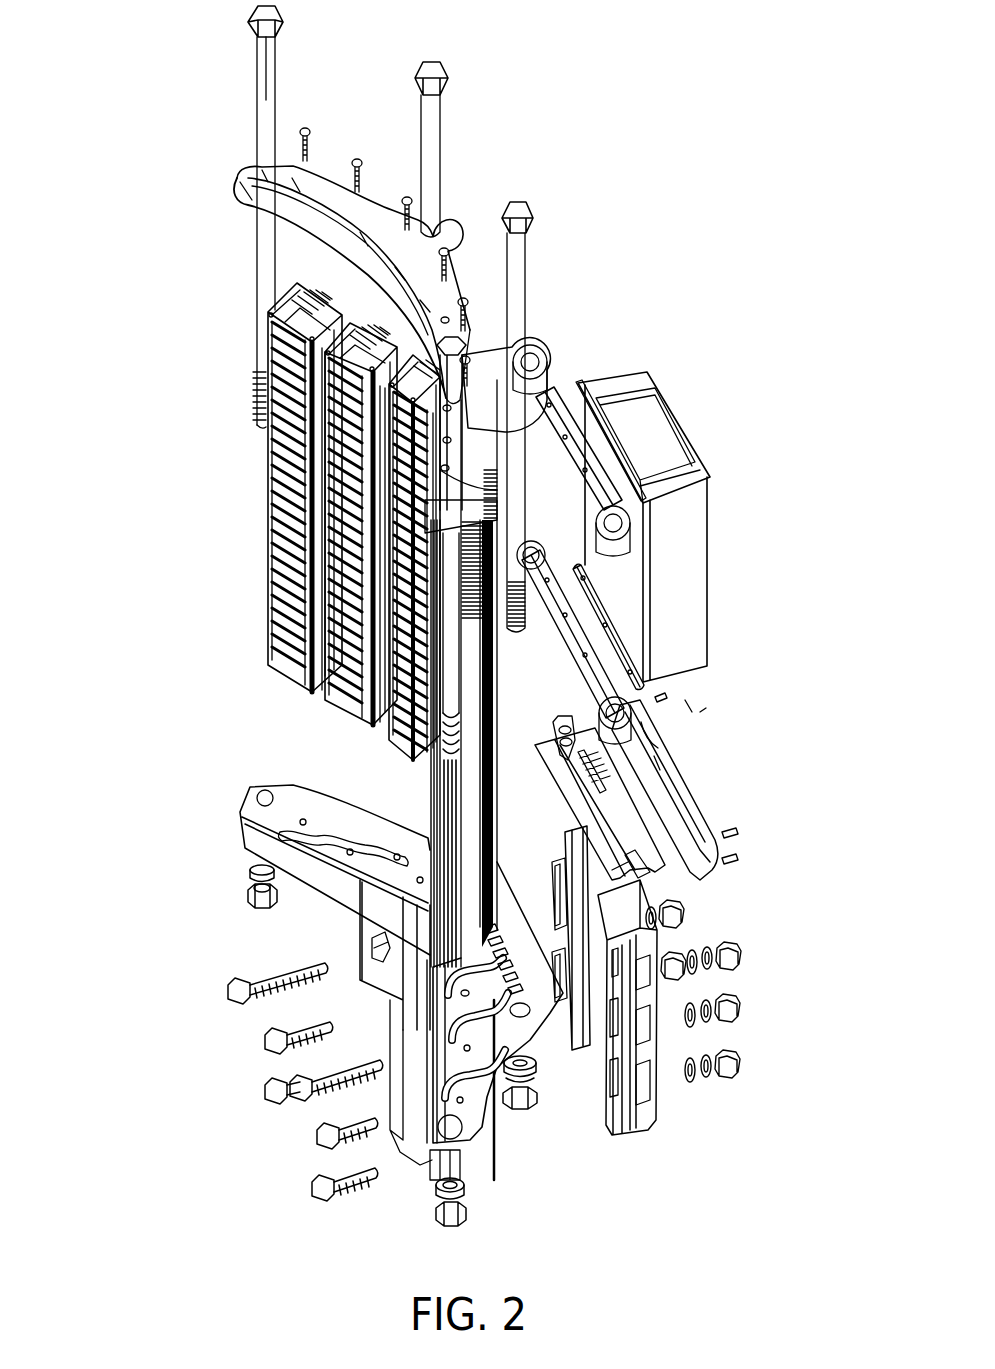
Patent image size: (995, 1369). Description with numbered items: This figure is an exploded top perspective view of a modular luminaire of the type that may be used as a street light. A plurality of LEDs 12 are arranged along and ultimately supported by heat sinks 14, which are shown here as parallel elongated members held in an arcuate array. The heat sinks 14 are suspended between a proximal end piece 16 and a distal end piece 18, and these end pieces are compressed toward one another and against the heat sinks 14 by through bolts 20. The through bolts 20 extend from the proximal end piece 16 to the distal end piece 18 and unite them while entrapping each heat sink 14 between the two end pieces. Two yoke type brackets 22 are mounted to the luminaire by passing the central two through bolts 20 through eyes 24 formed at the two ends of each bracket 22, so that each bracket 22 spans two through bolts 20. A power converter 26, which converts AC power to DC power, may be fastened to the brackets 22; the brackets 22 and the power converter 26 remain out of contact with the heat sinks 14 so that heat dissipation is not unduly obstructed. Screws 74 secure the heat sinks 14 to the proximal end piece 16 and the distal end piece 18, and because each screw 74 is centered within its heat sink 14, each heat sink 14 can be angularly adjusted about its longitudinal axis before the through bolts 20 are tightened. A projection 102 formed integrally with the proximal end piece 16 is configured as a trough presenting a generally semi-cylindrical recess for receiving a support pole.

The LEDs 12 is at (178, 522).
The heat sinks 14 is at (395, 385).
The proximal end piece 16 is at (250, 830).
The distal end piece 18 is at (273, 205).
The through bolts 20 is at (265, 80).
The yoke type brackets 22 is at (575, 428).
The eyes 24 is at (547, 365).
The power converter 26 is at (710, 583).
The screws 74 is at (355, 160).
The projection 102 is at (648, 1135).